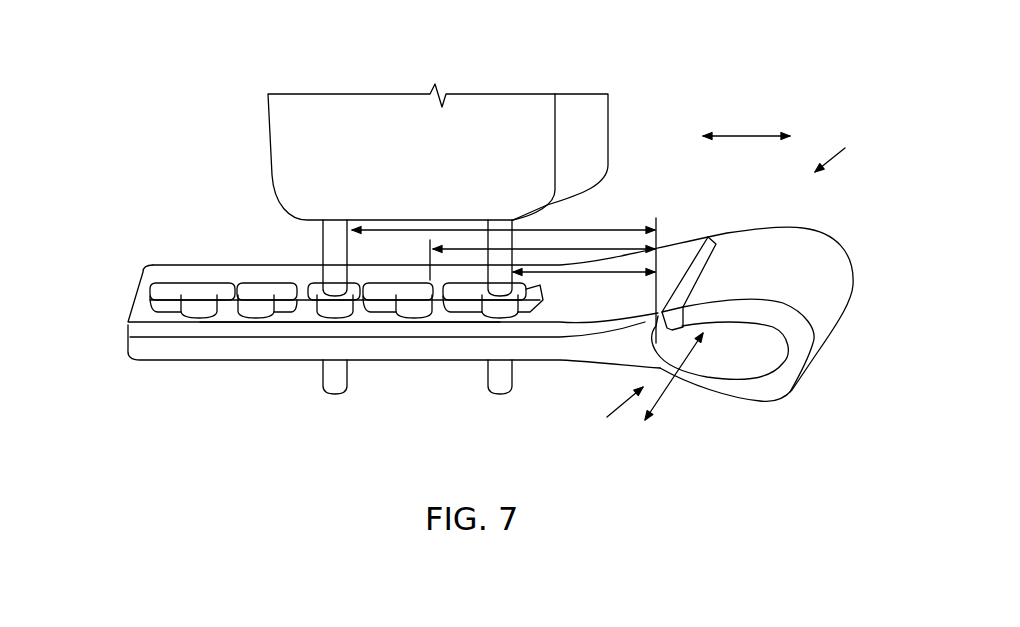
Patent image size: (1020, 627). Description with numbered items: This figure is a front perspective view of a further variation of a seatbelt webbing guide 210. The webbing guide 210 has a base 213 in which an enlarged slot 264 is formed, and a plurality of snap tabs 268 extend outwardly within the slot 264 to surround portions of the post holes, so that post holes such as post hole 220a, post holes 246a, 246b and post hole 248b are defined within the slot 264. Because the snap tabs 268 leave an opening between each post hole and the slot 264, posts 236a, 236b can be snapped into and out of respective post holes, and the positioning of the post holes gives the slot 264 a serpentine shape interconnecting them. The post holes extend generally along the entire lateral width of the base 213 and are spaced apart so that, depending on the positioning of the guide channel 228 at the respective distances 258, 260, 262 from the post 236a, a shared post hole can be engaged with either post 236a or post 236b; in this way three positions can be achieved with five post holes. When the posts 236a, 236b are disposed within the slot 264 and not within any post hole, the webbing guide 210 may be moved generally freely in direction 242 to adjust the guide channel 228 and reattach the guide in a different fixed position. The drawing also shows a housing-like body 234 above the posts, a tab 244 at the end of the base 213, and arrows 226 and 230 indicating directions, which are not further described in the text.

The webbing guide 210 is at (850, 153).
The base 213 is at (370, 363).
The post hole 220a is at (480, 297).
The longitudinal direction 226 is at (612, 414).
The guide channel 228 is at (752, 353).
The transverse direction 230 is at (675, 393).
The housing 234 is at (503, 113).
The post 236a is at (507, 387).
The post 236b is at (325, 375).
The direction 242 is at (750, 133).
The tab 244 is at (703, 257).
The post hole 246a is at (420, 292).
The post hole 246b is at (263, 288).
The post hole 248b is at (203, 290).
The distance 258 is at (567, 275).
The distance 260 is at (605, 248).
The distance 262 is at (585, 228).
The enlarged slot 264 is at (372, 313).
The snap tab 268 is at (180, 307).